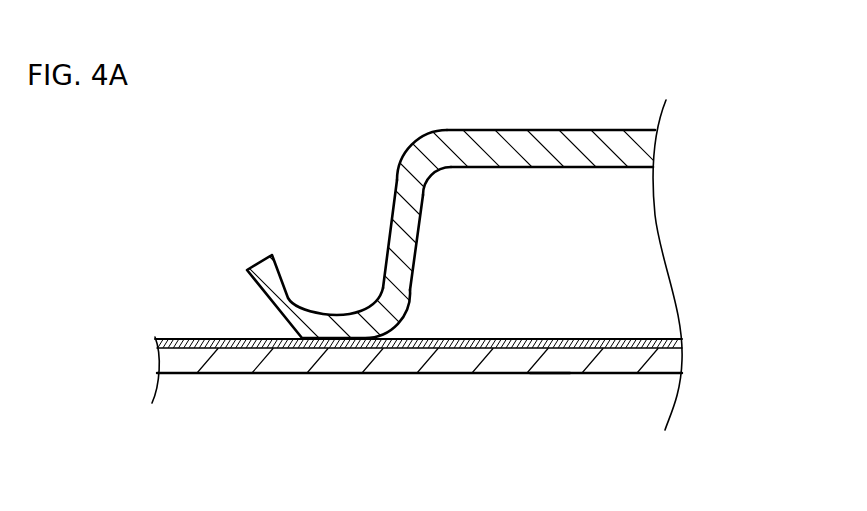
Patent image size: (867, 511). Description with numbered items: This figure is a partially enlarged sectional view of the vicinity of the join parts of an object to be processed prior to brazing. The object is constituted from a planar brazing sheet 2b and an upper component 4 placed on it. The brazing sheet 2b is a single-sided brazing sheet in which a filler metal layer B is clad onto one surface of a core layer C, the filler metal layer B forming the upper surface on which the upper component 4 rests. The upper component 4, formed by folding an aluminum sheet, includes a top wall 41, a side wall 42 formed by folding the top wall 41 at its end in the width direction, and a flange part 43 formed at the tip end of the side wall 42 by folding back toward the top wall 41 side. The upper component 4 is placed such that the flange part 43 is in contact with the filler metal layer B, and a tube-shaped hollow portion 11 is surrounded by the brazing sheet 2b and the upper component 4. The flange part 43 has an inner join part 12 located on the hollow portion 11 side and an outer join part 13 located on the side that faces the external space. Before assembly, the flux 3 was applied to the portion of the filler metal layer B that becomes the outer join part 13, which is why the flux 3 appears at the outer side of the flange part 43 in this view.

The upper component 4 is at (442, 189).
The top wall 41 is at (565, 142).
The side wall 42 is at (405, 228).
The flange part 43 is at (292, 303).
The hollow portion 11 is at (638, 233).
The inner join part 12 is at (423, 343).
The outer join part 13 is at (302, 338).
The flux 3 is at (268, 339).
The brazing sheet 2b is at (606, 373).
The filler metal layer B is at (620, 339).
The core layer C is at (548, 375).